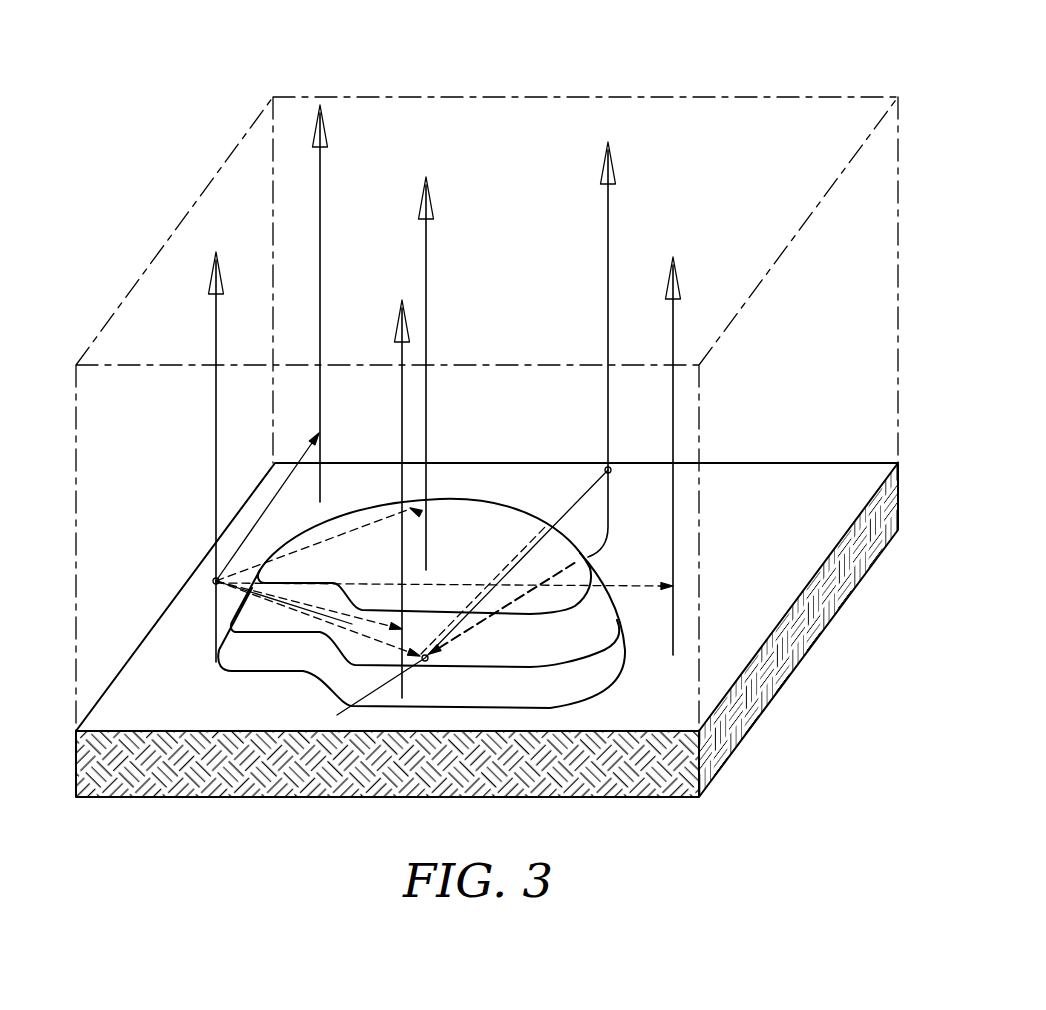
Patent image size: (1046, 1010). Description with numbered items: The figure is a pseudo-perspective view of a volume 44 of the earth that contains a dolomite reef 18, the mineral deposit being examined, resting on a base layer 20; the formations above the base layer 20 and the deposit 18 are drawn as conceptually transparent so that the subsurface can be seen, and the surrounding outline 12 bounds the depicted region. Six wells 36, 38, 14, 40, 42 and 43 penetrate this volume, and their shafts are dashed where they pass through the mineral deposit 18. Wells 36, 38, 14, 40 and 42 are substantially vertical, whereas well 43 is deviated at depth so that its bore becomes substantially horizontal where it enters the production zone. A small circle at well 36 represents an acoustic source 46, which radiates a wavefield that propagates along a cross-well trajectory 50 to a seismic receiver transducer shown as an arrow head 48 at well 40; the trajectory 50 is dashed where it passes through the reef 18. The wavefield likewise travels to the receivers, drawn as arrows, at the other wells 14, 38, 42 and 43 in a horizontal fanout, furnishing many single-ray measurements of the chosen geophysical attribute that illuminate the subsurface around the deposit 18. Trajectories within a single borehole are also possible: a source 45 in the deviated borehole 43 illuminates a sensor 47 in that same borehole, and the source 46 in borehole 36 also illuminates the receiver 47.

The monitored volume 12 is at (537, 95).
The well 14 is at (400, 412).
The dolomite reef 18 is at (257, 688).
The base layer 20 is at (173, 642).
The well 36 is at (216, 333).
The well 38 is at (320, 163).
The well 40 is at (426, 258).
The well 42 is at (673, 566).
The well 43 is at (608, 213).
The volume 44 is at (756, 49).
The source 45 is at (604, 472).
The acoustic source 46 is at (212, 580).
The sensor 47 is at (429, 663).
The arrow head 48 is at (416, 512).
The cross-well trajectory 50 is at (240, 572).